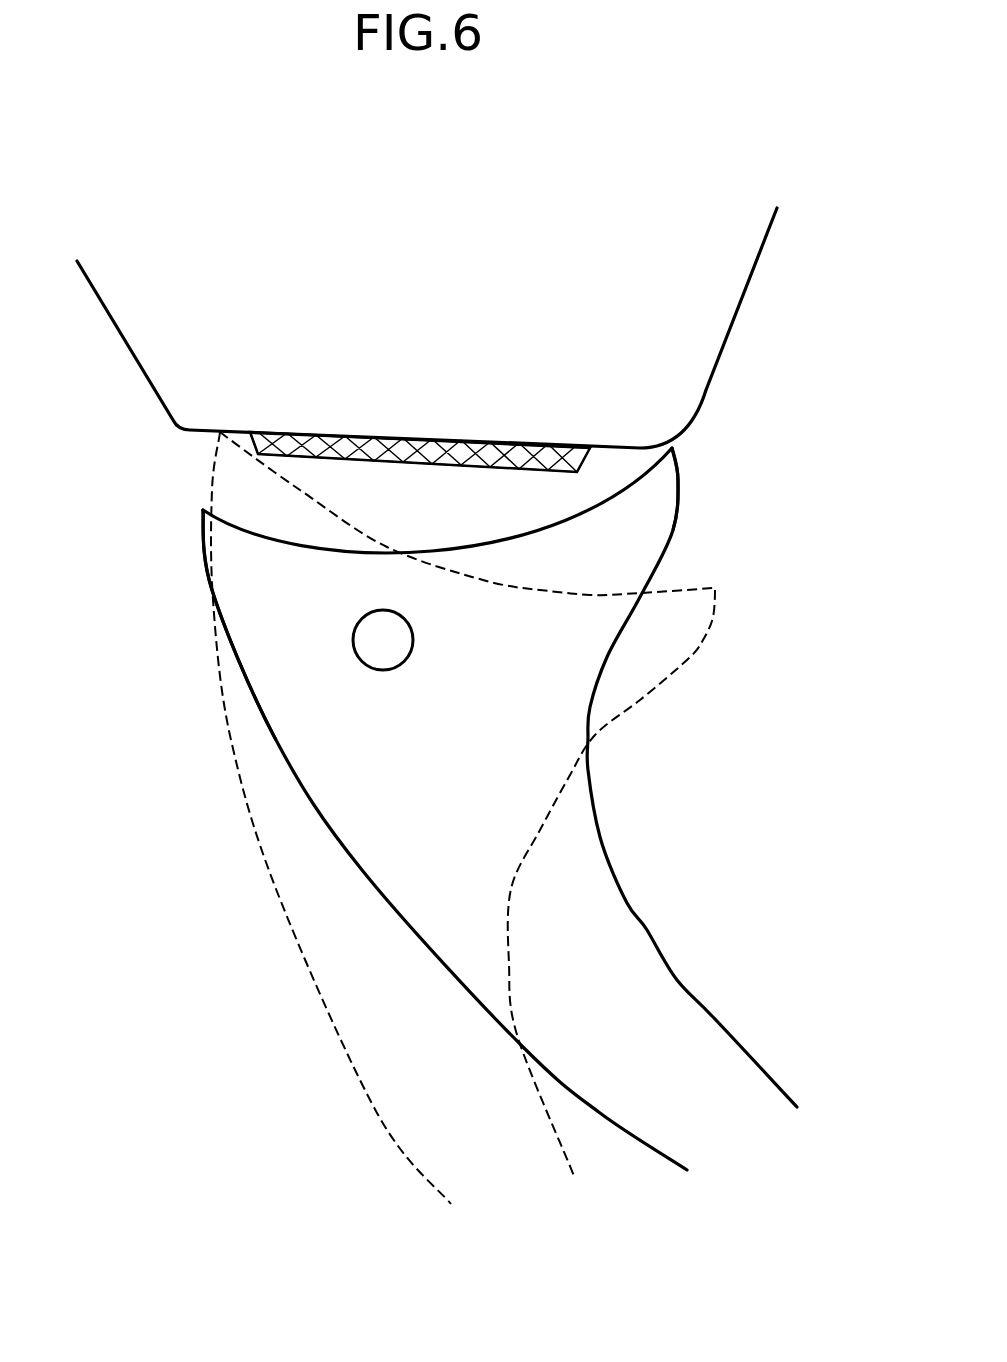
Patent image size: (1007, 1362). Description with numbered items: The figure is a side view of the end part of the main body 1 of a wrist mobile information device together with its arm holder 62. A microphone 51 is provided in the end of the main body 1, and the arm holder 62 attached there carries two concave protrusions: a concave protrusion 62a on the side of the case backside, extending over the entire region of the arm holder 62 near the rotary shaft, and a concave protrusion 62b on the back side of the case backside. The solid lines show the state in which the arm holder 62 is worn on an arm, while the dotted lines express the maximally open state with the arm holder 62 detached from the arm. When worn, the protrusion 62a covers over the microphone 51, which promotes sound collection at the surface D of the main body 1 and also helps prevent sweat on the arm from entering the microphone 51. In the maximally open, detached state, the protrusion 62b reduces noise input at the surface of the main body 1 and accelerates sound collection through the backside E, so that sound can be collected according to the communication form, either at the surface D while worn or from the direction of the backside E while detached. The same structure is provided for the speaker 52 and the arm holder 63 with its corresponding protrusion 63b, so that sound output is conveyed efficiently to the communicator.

The main body 1 is at (712, 313).
The microphone 51 is at (490, 438).
The speaker 52 is at (445, 432).
The arm holder 62 is at (625, 938).
The arm holder 63 is at (480, 715).
The concave protrusion 62a is at (667, 490).
The concave protrusion 62b is at (205, 522).
The concave protrusion 63b is at (508, 519).
The surface D is at (142, 383).
The backside E is at (780, 373).